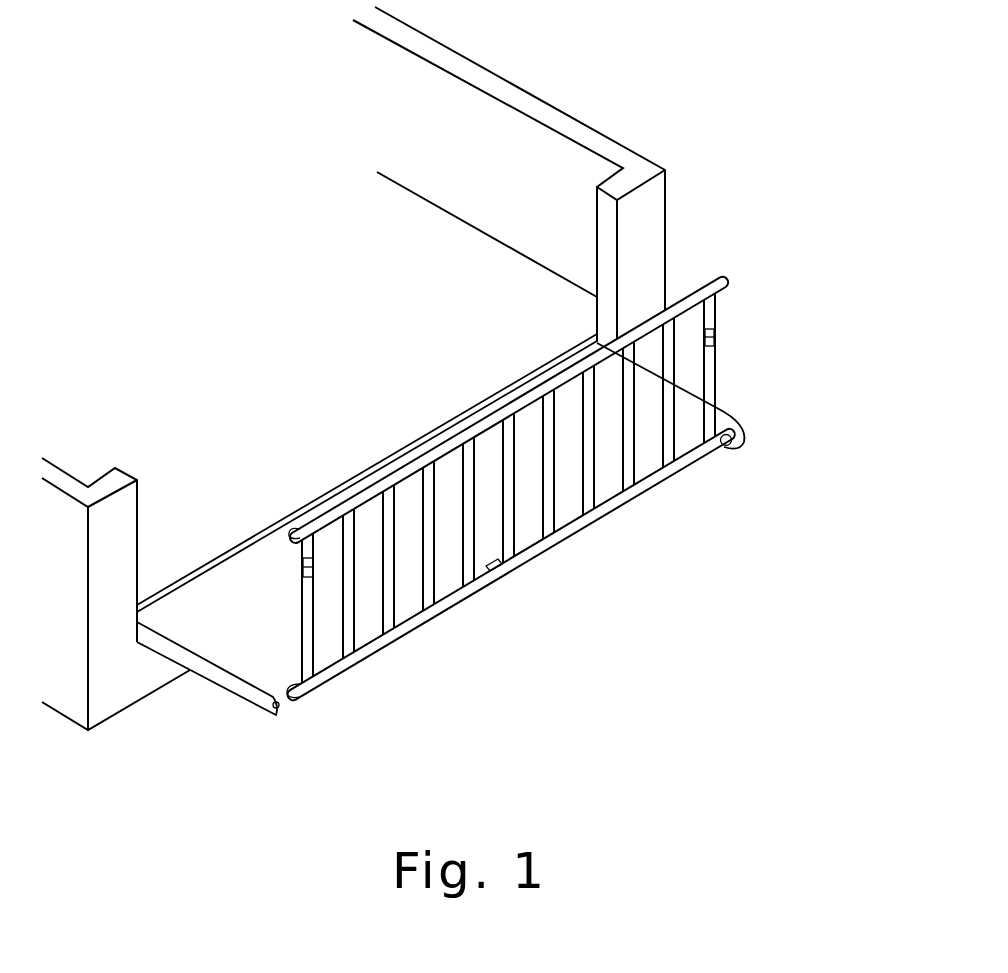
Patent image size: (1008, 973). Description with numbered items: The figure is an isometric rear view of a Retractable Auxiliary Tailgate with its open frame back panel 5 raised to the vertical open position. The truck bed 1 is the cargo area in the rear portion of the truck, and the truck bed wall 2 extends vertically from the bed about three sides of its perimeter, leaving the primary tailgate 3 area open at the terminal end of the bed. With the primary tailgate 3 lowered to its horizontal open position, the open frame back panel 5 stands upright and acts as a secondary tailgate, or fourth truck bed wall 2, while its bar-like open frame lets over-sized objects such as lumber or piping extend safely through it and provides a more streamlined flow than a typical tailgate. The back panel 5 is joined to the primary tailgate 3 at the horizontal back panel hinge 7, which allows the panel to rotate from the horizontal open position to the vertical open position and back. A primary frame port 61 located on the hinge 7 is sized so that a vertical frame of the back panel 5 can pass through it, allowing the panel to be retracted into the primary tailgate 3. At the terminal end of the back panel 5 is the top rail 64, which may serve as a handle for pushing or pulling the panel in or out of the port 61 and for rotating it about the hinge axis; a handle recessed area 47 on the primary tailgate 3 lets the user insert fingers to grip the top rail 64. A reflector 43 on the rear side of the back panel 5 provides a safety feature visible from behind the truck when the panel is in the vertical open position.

The truck bed 1 is at (382, 223).
The truck bed wall 2 is at (520, 172).
The primary tailgate 3 is at (222, 605).
The open frame back panel 5 is at (712, 382).
The horizontal back panel hinge 7 is at (373, 648).
The reflector 43 is at (712, 335).
The handle recessed area 47 is at (507, 567).
The primary frame port 61 is at (328, 683).
The top rail 64 is at (703, 282).